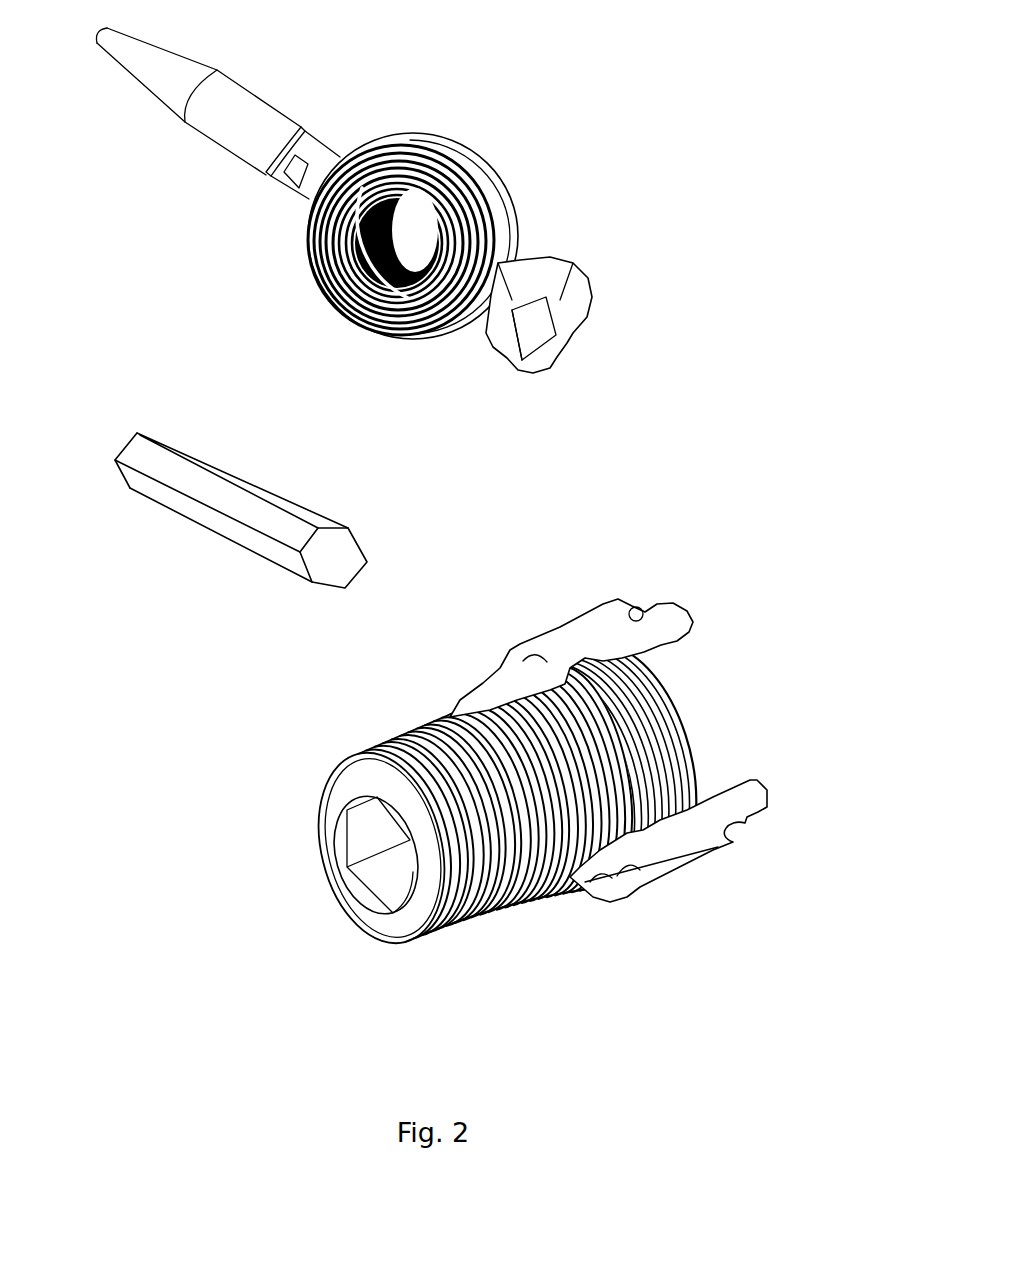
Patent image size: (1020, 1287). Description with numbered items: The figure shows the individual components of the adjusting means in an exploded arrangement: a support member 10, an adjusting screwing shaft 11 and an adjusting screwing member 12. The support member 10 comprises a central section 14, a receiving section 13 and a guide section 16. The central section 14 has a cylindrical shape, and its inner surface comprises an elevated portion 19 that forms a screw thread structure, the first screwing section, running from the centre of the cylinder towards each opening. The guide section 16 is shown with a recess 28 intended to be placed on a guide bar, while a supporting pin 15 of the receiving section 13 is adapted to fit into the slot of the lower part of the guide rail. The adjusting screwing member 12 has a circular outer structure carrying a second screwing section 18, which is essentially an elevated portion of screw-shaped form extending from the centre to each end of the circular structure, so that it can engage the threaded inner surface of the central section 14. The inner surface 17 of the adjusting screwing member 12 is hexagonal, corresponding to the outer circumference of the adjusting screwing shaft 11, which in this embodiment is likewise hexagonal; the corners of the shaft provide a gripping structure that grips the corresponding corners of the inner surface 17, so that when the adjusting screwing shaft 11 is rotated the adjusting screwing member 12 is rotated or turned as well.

The support member 10 is at (517, 202).
The adjusting screwing shaft 11 is at (220, 536).
The adjusting screwing member 12 is at (465, 861).
The receiving section 13 is at (294, 193).
The central section 14 is at (430, 137).
The supporting pin 15 is at (220, 68).
The guide section 16 is at (486, 337).
The inner surface 17 is at (391, 884).
The second screwing section 18 is at (484, 921).
The elevated portion 19 is at (655, 746).
The recess 28 is at (527, 348).